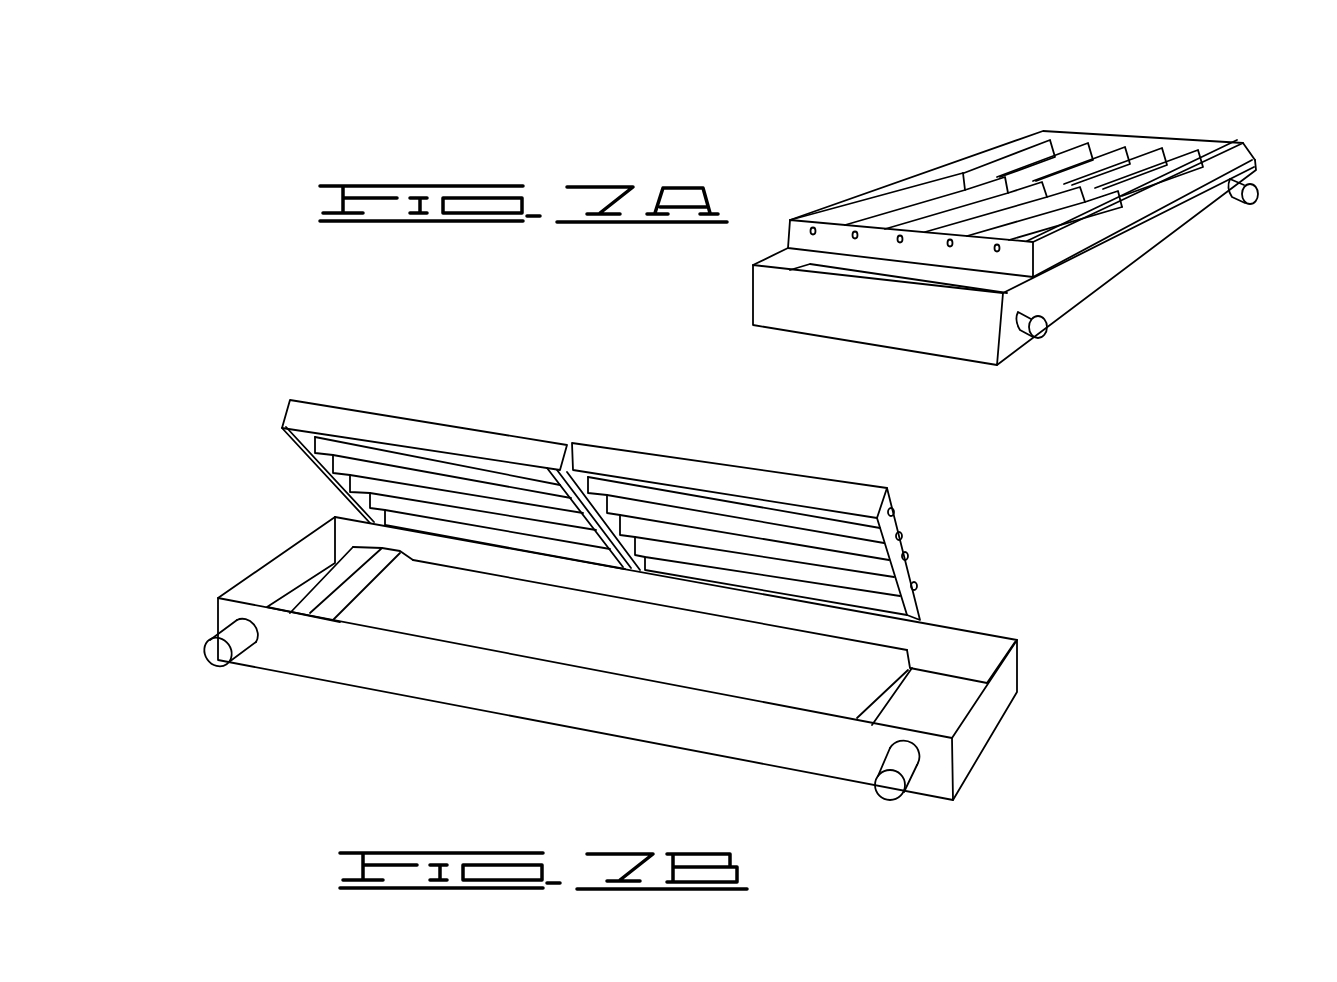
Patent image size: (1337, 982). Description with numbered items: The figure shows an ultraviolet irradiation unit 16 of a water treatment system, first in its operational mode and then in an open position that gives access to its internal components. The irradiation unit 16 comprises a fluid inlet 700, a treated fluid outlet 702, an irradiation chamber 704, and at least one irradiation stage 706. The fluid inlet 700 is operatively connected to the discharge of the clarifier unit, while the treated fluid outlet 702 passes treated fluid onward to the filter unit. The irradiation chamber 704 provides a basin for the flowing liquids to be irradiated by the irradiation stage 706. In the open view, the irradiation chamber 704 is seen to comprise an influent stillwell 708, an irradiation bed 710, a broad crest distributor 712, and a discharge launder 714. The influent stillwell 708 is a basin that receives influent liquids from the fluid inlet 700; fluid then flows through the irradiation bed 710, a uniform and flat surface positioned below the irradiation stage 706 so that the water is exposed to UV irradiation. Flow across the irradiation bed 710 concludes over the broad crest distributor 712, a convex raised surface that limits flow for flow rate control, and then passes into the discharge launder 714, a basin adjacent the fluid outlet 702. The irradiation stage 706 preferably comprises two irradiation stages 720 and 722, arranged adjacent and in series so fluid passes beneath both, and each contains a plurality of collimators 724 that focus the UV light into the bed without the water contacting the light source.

In FIG. 7A, the irradiation unit 16 is at (915, 127).
In FIG. 7B, the irradiation unit 16 is at (1016, 609).
In FIG. 7A, the fluid inlet 700 is at (1254, 178).
In FIG. 7B, the fluid inlet 700 is at (893, 800).
In FIG. 7A, the treated fluid outlet 702 is at (1040, 340).
In FIG. 7B, the treated fluid outlet 702 is at (218, 660).
In FIG. 7A, the irradiation chamber 704 is at (1163, 237).
In FIG. 7B, the irradiation chamber 704 is at (705, 735).
In FIG. 7A, the irradiation stage 706 is at (1033, 133).
In FIG. 7B, the irradiation stage 706 is at (498, 433).
In FIG. 7B, the influent stillwell 708 is at (943, 713).
In FIG. 7B, the irradiation bed 710 is at (640, 660).
In FIG. 7B, the broad crest distributor 712 is at (337, 587).
In FIG. 7B, the discharge launder 714 is at (272, 578).
In FIG. 7B, the irradiation stage 720 is at (905, 556).
In FIG. 7B, the irradiation stage 722 is at (310, 466).
In FIG. 7B, the collimators 724 is at (378, 475).